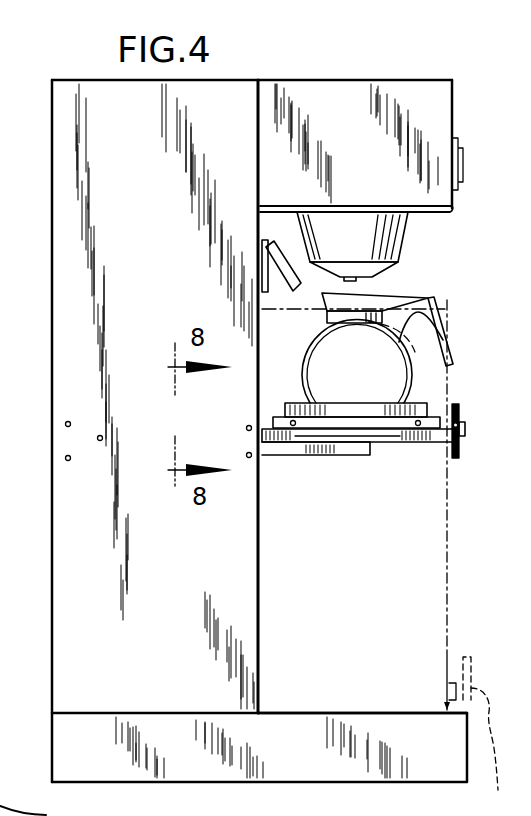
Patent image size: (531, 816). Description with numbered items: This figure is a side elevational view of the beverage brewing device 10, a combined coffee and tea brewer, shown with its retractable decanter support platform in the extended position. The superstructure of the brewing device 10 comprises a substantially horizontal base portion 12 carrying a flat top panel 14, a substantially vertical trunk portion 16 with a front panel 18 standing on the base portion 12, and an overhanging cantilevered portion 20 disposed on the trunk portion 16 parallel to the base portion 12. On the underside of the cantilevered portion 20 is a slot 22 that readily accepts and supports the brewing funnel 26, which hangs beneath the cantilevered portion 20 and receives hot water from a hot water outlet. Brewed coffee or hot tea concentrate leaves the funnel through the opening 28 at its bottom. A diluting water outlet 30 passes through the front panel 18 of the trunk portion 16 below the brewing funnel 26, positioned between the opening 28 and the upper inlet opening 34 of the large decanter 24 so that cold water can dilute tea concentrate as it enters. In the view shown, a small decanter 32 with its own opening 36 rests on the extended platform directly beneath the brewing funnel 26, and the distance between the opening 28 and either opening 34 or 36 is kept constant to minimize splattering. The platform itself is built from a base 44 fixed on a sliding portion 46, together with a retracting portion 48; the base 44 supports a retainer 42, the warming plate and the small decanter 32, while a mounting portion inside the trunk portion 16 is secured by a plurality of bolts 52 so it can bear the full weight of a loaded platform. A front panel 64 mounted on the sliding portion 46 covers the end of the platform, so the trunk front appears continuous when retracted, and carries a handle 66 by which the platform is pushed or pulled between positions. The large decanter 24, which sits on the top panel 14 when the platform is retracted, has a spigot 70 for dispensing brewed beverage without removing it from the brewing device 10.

The beverage brewing device 10 is at (298, 72).
The base portion 12 is at (338, 783).
The top panel 14 is at (384, 710).
The trunk portion 16 is at (52, 486).
The front panel 18 is at (262, 650).
The cantilevered portion 20 is at (377, 80).
The slot 22 is at (452, 214).
The large decanter 24 is at (449, 548).
The brewing funnel 26 is at (410, 236).
The opening 28 is at (358, 281).
The diluting water outlet 30 is at (280, 262).
The small decanter 32 is at (415, 374).
The upper inlet opening 34 is at (413, 352).
The opening 36 is at (362, 302).
The retainer 42 is at (428, 404).
The base 44 is at (275, 412).
The sliding portion 46 is at (390, 445).
The retracting portion 48 is at (275, 456).
The bolts 52 is at (66, 456).
The front panel 64 is at (458, 408).
The handle 66 is at (460, 448).
The spigot 70 is at (484, 736).